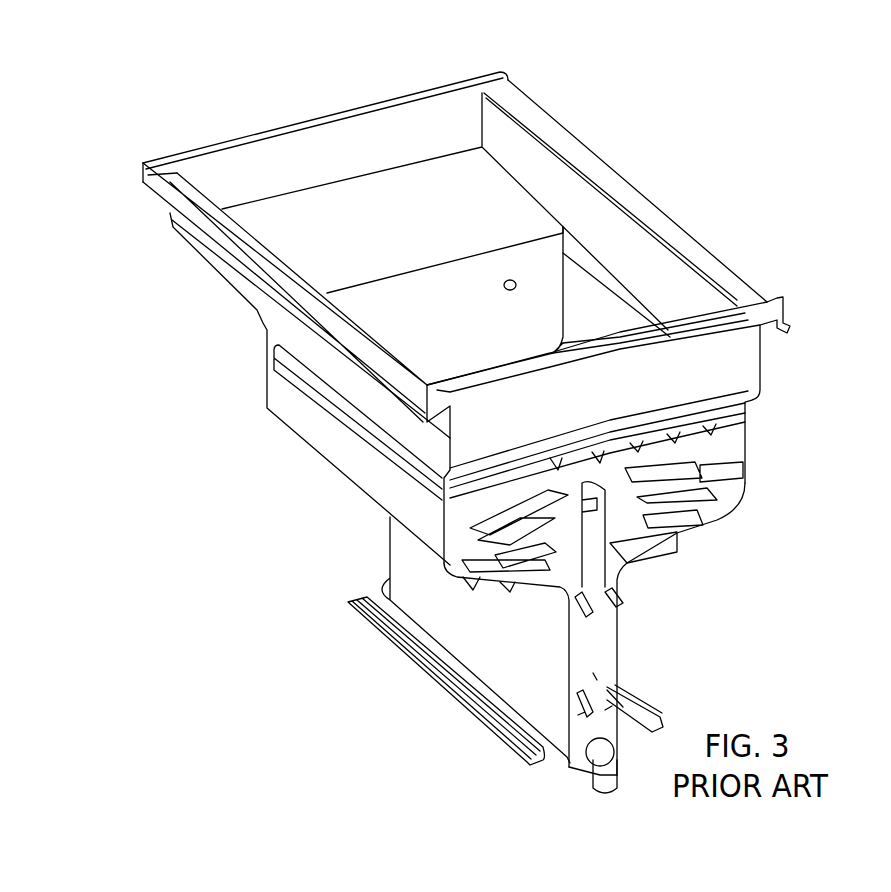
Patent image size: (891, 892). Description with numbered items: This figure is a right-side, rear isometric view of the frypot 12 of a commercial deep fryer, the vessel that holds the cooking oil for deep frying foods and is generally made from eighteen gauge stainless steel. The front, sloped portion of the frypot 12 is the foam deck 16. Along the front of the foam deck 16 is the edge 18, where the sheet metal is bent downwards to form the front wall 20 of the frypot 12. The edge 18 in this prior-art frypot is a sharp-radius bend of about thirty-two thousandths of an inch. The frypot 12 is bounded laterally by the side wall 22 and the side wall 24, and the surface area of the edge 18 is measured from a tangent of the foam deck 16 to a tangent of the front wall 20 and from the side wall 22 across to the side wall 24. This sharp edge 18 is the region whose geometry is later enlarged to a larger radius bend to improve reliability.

The frypot 12 is at (735, 273).
The foam deck 16 is at (357, 232).
The edge 18 is at (537, 245).
The front wall 20 is at (434, 327).
The side wall 22 is at (334, 372).
The side wall 24 is at (653, 264).